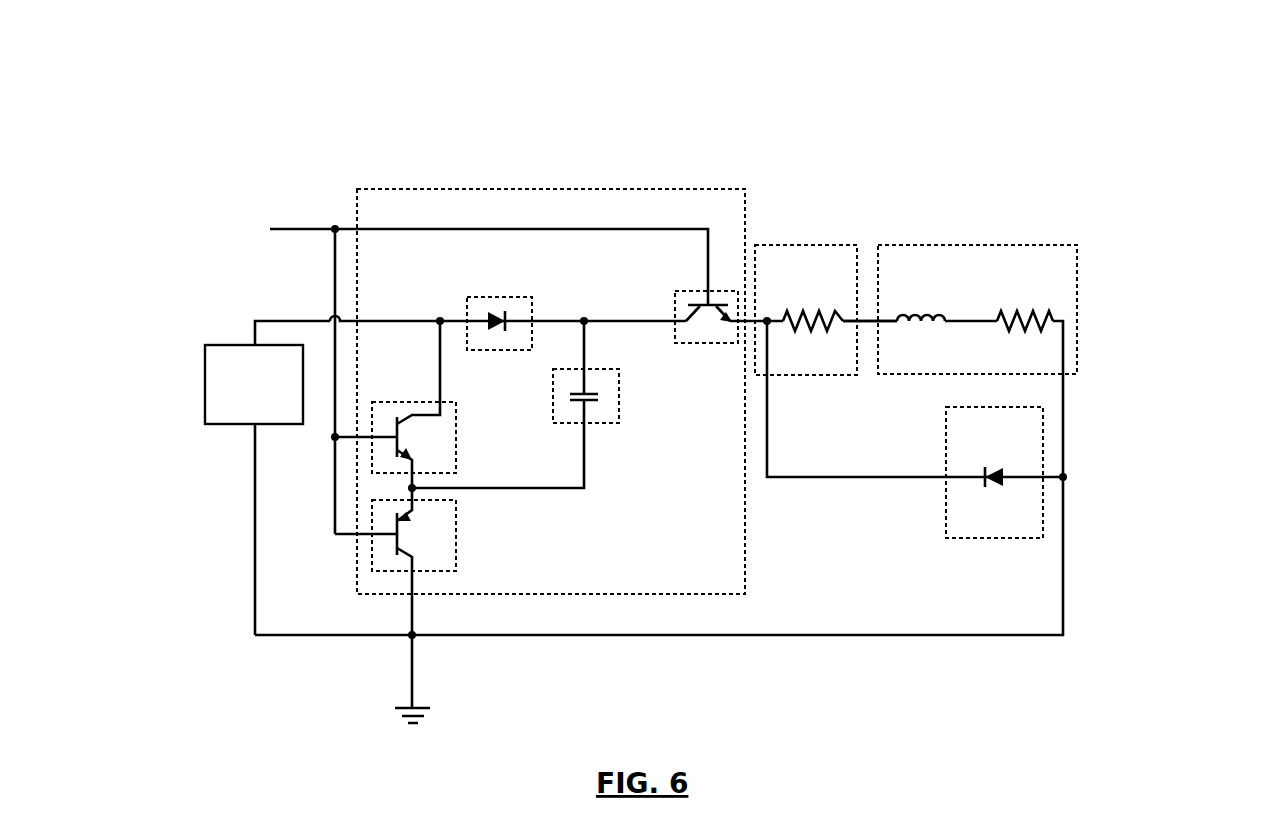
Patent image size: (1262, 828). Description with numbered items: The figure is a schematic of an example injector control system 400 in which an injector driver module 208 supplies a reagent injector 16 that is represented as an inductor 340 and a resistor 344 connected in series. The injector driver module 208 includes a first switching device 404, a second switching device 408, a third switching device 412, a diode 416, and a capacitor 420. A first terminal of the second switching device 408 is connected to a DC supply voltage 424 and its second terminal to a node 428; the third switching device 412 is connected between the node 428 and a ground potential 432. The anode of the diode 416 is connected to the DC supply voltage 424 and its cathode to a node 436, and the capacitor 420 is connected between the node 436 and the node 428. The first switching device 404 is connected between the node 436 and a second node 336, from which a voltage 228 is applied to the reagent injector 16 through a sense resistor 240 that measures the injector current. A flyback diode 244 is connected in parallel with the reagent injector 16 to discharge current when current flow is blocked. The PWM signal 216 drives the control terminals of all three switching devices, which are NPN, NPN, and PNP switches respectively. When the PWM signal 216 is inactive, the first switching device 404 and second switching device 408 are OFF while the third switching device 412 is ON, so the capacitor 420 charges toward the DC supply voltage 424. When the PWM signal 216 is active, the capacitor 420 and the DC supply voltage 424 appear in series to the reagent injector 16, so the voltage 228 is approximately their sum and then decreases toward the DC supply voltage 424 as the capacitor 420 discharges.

The injector control system 400 is at (1202, 70).
The PWM signal 216 is at (271, 229).
The DC supply voltage 424 is at (206, 403).
The injector driver module 208 is at (553, 189).
The diode 416 is at (479, 350).
The node 436 is at (584, 321).
The capacitor 420 is at (619, 400).
The second switching device 408 is at (456, 446).
The third switching device 412 is at (456, 540).
The node 428 is at (414, 489).
The first switching device 404 is at (702, 291).
The sense resistor 240 is at (800, 245).
The second node 336 is at (768, 323).
The voltage 228 is at (868, 323).
The reagent injector 16 is at (968, 245).
The inductor 340 is at (898, 323).
The resistor 344 is at (1004, 313).
The flyback diode 244 is at (946, 437).
The ground potential 432 is at (417, 690).